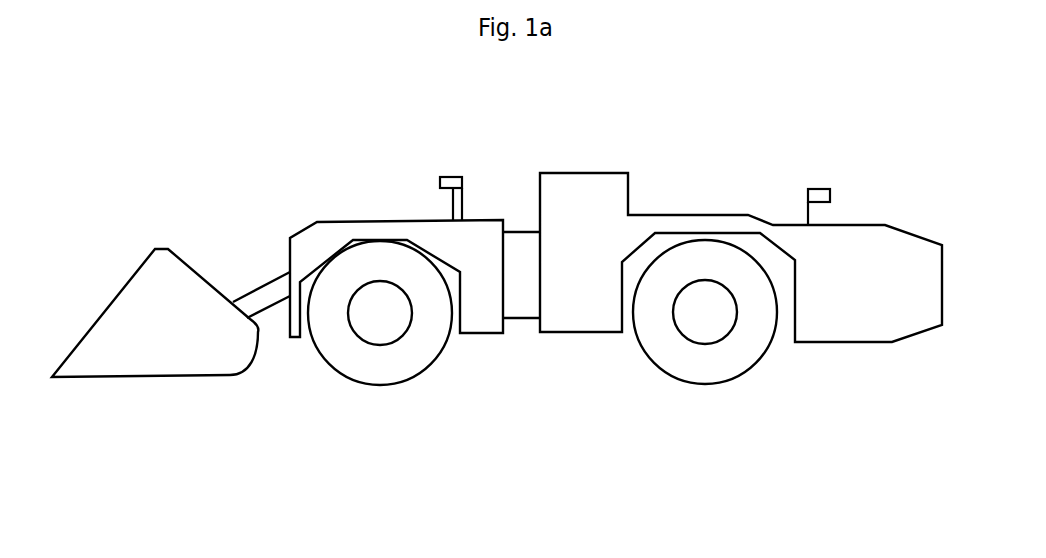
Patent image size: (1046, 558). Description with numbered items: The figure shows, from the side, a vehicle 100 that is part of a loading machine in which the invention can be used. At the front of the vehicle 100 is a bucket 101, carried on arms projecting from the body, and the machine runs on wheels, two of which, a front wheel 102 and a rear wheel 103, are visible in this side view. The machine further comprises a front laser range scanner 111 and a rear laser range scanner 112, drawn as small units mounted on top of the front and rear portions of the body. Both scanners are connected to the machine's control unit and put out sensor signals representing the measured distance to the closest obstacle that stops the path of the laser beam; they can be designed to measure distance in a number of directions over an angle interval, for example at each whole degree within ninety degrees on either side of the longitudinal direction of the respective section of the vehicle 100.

The vehicle 100 is at (850, 323).
The bucket 101 is at (148, 348).
The wheel 102 is at (372, 362).
The wheel 103 is at (695, 360).
The front laser range scanner 111 is at (445, 178).
The rear laser range scanner 112 is at (818, 188).